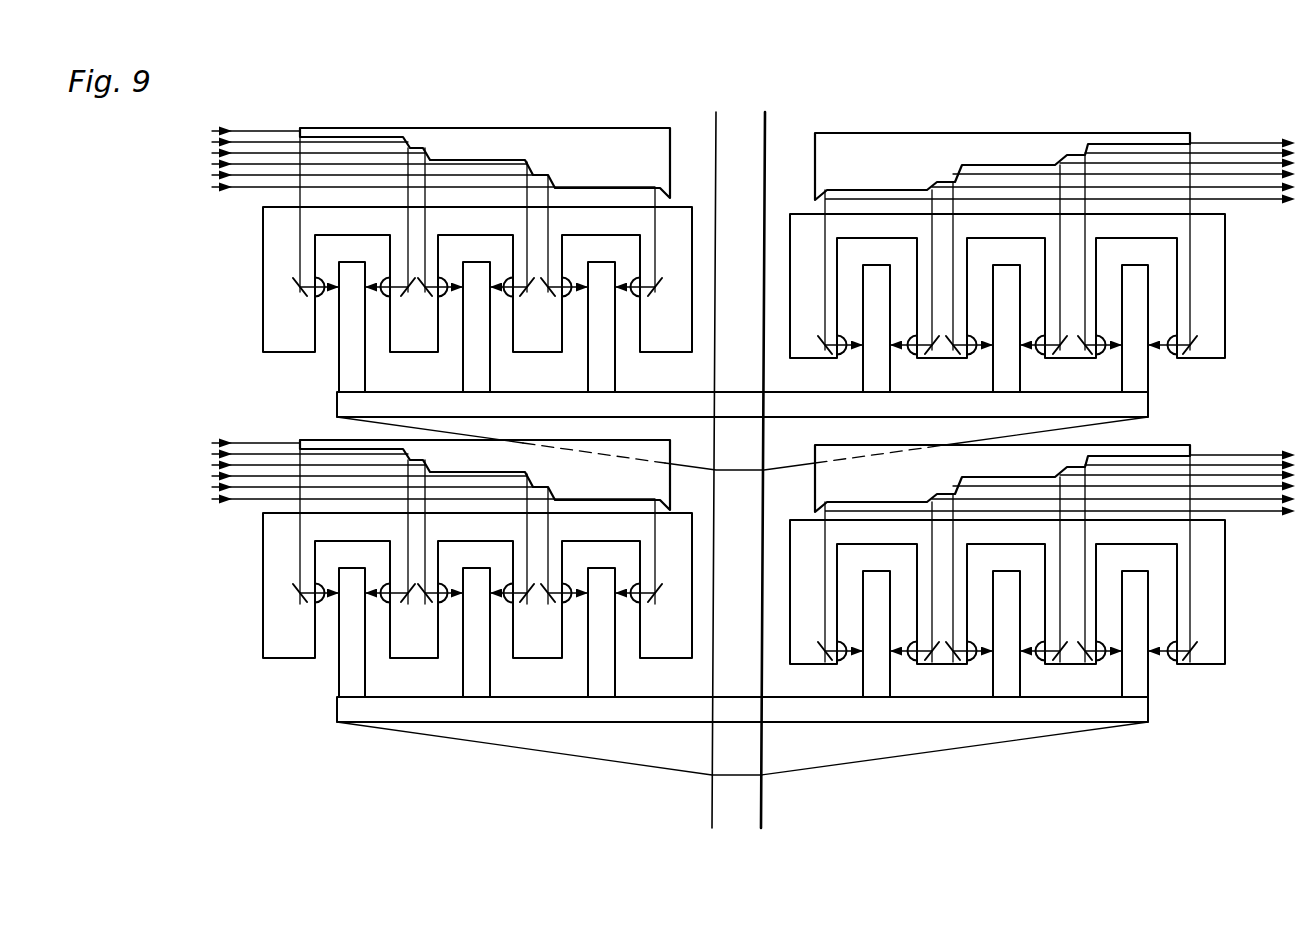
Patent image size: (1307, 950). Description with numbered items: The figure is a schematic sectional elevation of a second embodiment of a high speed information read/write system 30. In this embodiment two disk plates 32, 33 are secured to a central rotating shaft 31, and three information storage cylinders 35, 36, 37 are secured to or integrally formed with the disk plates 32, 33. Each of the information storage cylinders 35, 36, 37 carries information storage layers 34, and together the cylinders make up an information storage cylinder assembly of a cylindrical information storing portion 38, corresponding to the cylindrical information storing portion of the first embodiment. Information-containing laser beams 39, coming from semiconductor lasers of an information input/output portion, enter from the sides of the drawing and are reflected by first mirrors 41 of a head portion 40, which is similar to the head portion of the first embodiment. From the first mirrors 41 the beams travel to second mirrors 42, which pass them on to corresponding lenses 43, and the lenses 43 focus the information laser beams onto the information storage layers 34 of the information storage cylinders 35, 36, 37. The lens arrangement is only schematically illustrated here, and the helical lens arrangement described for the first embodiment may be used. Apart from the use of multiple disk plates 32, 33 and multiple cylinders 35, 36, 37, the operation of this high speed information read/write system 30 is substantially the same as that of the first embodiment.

The high speed information read/write system 30 is at (675, 797).
The central rotating shaft 31 is at (747, 797).
The disk plate 32 is at (993, 718).
The disk plate 33 is at (1123, 408).
The information storage layers 34 is at (1117, 667).
The information storage cylinder 35 is at (872, 690).
The information storage cylinder 36 is at (1003, 687).
The information storage cylinder 37 is at (1133, 677).
The cylindrical information storing portion 38 is at (328, 673).
The information-containing laser beams 39 is at (223, 197).
The head portion 40 is at (441, 178).
The first mirrors 41 is at (613, 137).
The second mirrors 42 is at (418, 307).
The lenses 43 is at (382, 307).